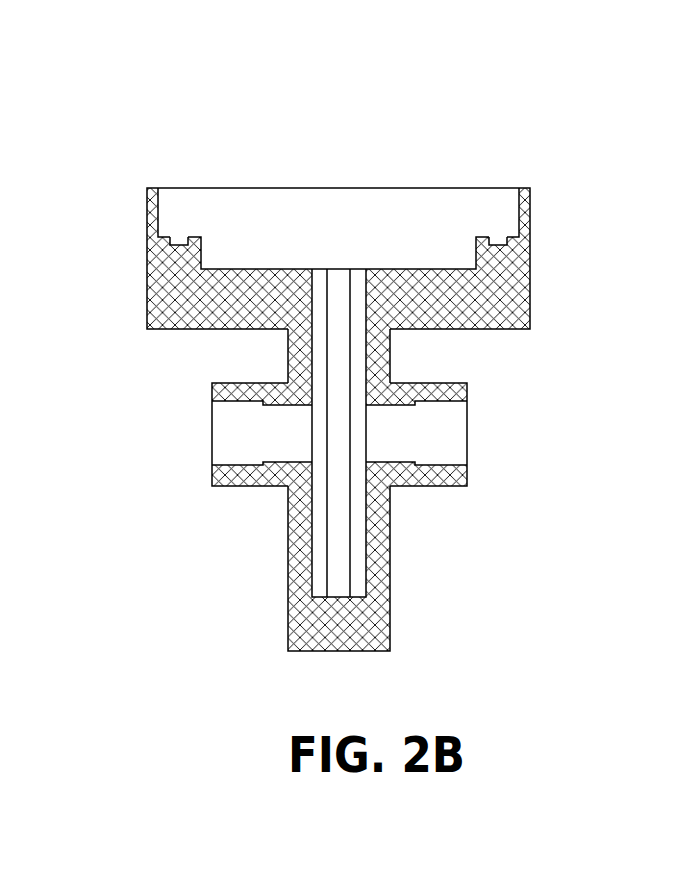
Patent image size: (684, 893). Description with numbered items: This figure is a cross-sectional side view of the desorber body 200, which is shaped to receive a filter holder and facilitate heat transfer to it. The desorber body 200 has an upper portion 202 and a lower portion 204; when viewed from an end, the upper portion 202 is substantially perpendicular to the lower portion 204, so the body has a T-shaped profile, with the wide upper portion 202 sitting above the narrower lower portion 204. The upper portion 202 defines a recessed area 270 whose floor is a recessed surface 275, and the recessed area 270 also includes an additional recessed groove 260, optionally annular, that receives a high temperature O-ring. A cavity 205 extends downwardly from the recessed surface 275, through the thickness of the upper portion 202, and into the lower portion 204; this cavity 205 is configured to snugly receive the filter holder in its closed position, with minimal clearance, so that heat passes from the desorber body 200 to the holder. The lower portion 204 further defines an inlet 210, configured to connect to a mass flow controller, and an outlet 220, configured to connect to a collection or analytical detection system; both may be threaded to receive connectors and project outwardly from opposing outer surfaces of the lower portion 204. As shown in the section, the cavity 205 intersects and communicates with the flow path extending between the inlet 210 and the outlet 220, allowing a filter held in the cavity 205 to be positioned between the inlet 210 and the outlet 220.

The desorber body 200 is at (170, 132).
The upper portion 202 is at (530, 268).
The lower portion 204 is at (393, 572).
The cavity 205 is at (338, 350).
The inlet 210 is at (212, 443).
The outlet 220 is at (467, 432).
The recessed groove 260 is at (498, 238).
The recessed area 270 is at (255, 210).
The recessed surface 275 is at (165, 235).